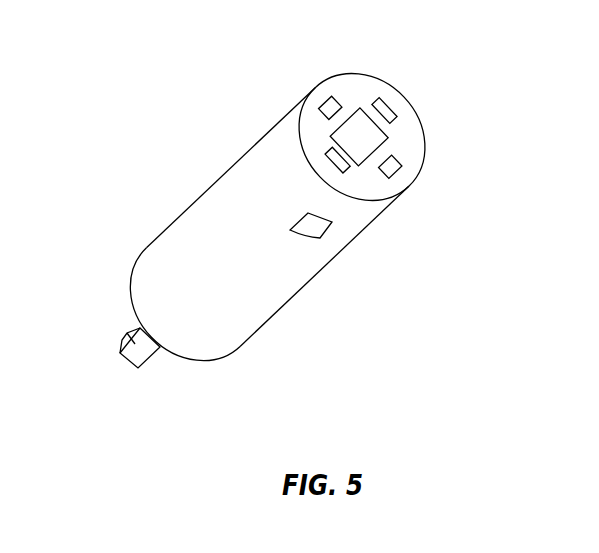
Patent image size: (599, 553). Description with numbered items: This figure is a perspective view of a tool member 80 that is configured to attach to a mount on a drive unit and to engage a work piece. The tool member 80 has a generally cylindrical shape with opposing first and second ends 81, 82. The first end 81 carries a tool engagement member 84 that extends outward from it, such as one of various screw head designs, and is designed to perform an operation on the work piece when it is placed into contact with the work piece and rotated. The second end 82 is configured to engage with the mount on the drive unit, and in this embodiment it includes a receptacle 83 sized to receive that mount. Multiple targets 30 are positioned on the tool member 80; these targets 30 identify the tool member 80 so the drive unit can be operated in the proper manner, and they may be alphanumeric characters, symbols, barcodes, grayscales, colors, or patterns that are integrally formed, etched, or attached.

The tool member 80 is at (131, 103).
The first end 81 is at (191, 357).
The second end 82 is at (408, 140).
The receptacle 83 is at (353, 128).
The target 30 is at (325, 102).
The tool engagement member 84 is at (137, 350).